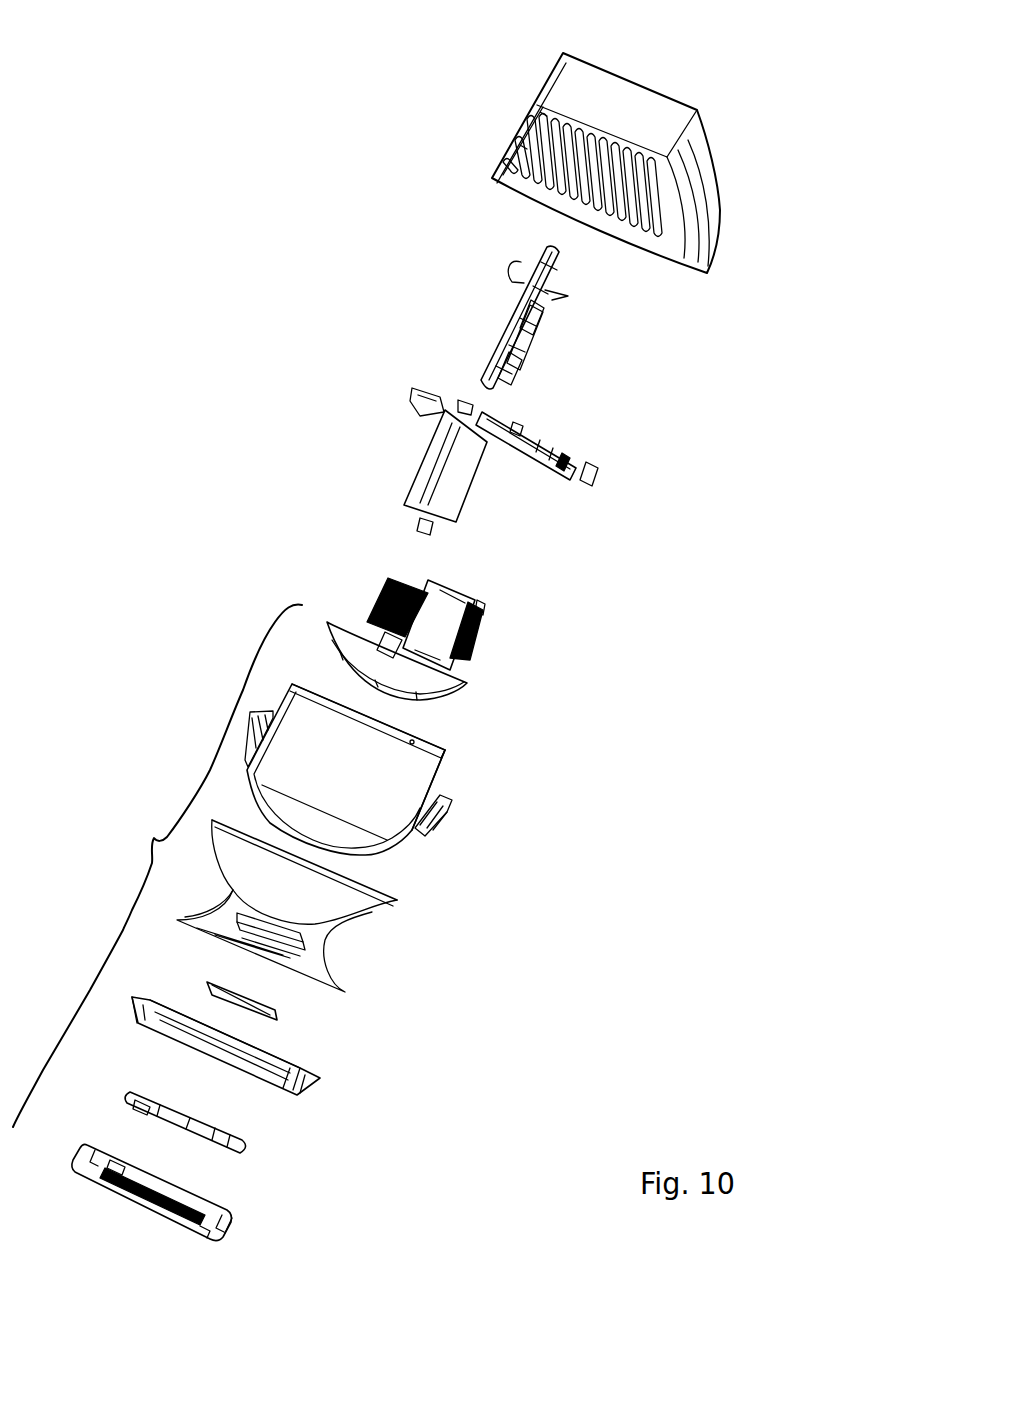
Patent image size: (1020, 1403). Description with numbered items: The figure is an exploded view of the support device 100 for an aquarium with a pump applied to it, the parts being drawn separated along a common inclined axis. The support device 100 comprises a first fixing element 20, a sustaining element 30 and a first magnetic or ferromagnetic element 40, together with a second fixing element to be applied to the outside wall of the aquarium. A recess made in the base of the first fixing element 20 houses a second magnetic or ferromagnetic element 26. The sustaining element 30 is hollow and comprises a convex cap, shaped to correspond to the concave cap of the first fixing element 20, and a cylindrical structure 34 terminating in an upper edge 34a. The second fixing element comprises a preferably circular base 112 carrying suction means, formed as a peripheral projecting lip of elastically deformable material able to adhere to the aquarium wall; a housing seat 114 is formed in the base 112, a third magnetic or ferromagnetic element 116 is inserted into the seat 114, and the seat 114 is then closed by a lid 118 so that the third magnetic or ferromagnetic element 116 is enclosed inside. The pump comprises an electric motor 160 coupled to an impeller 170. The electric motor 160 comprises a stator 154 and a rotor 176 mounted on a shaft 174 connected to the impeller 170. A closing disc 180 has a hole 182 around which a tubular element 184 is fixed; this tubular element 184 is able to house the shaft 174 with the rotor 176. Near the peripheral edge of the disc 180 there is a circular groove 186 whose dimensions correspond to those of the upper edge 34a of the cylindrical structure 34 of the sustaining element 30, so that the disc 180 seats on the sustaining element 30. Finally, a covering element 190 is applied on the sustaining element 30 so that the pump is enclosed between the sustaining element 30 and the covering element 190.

The support device 100 is at (157, 866).
The covering element 190 is at (537, 105).
The impeller 170 is at (512, 292).
The shaft 174 is at (533, 327).
The rotor 176 is at (520, 370).
The closing disc 180 is at (477, 455).
The hole 182 is at (487, 410).
The tubular element 184 is at (467, 502).
The circular groove 186 is at (410, 420).
The electric motor 160 is at (417, 598).
The stator 154 is at (487, 622).
The first magnetic or ferromagnetic element 40 is at (468, 683).
The sustaining element 30 is at (410, 792).
The cylindrical structure 34 is at (428, 848).
The upper edge 34a is at (448, 751).
The first fixing element 20 is at (393, 915).
The second magnetic or ferromagnetic element 26 is at (282, 1015).
The base 112 is at (327, 1130).
The housing seat 114 is at (270, 1090).
The third magnetic or ferromagnetic element 116 is at (250, 1145).
The lid 118 is at (238, 1203).